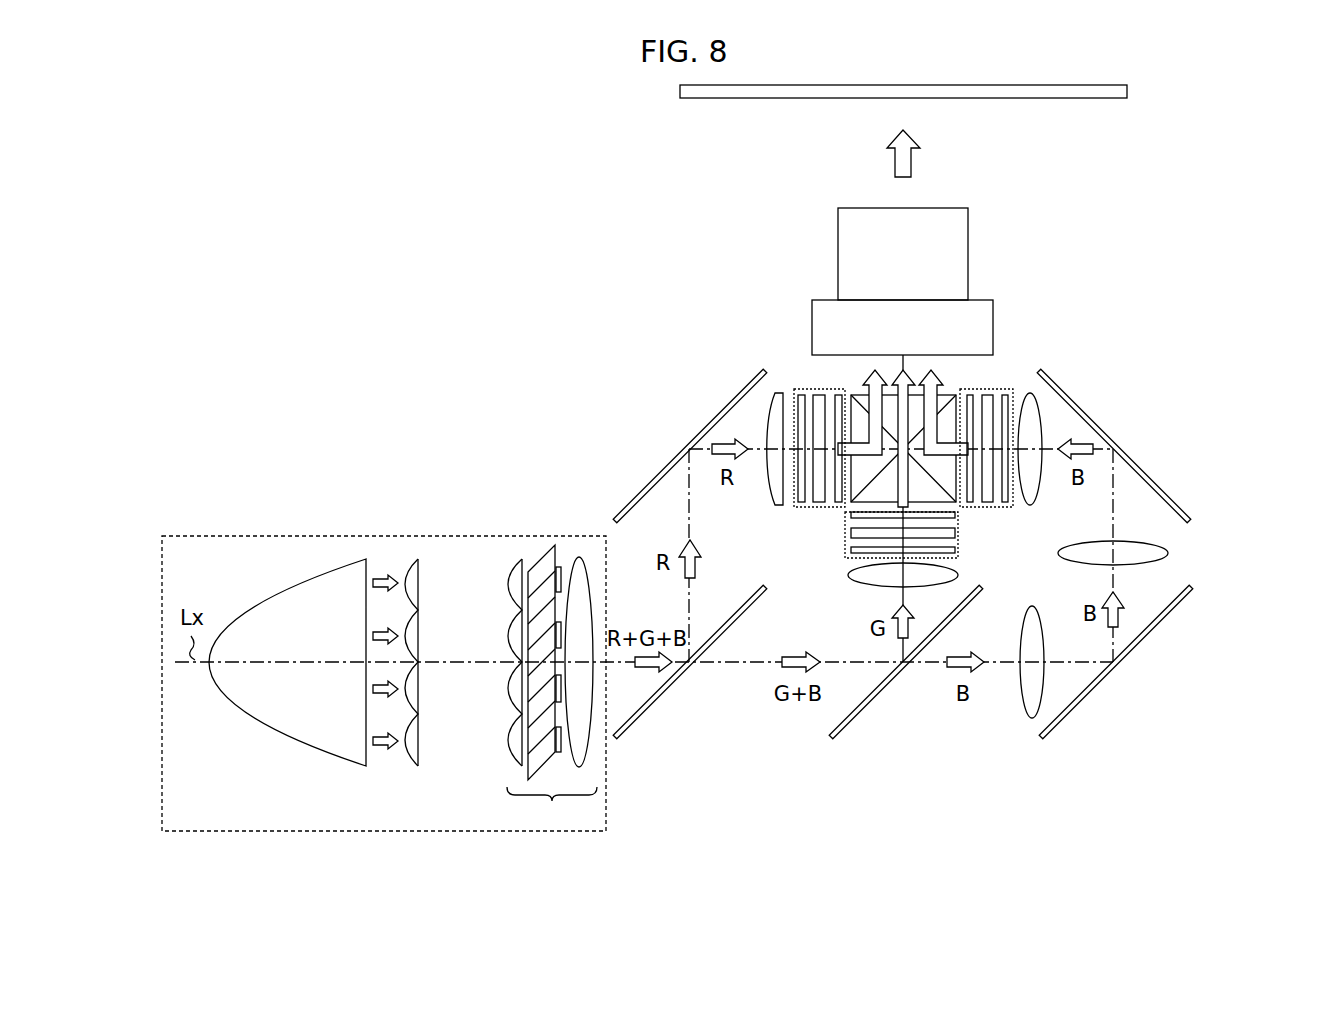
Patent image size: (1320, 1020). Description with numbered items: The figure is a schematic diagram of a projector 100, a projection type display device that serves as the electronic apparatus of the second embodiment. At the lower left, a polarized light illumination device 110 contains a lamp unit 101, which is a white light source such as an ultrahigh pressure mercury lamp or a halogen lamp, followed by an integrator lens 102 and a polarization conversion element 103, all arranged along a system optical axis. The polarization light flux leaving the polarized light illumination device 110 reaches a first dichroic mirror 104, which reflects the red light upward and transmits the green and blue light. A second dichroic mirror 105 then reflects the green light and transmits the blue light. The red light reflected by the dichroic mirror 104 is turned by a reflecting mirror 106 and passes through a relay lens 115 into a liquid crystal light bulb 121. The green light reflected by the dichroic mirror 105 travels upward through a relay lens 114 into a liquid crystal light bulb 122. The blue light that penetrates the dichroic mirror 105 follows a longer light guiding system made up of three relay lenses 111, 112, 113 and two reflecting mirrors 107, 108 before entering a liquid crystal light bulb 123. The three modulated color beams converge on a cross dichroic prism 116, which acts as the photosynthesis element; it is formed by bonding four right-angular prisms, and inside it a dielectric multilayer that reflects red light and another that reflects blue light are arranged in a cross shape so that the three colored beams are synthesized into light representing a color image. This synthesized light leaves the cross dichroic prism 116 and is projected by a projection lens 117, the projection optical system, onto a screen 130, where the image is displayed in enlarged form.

The projector 100 is at (1179, 212).
The lamp unit 101 is at (280, 745).
The integrator lens 102 is at (415, 770).
The polarization conversion element 103 is at (552, 686).
The dichroic mirror 104 is at (655, 707).
The dichroic mirror 105 is at (867, 707).
The reflecting mirror 106 is at (689, 441).
The reflecting mirror 107 is at (1080, 705).
The reflecting mirror 108 is at (1114, 440).
The polarized light illumination device 110 is at (398, 533).
The relay lens 111 is at (1032, 720).
The relay lens 112 is at (1170, 553).
The relay lens 113 is at (1030, 508).
The relay lens 114 is at (849, 577).
The relay lens 115 is at (779, 508).
The cross dichroic prism 116 is at (960, 391).
The projection lens 117 is at (962, 250).
The liquid crystal light bulb 121 is at (798, 388).
The liquid crystal light bulb 122 is at (960, 560).
The liquid crystal light bulb 123 is at (1006, 388).
The screen 130 is at (1055, 100).